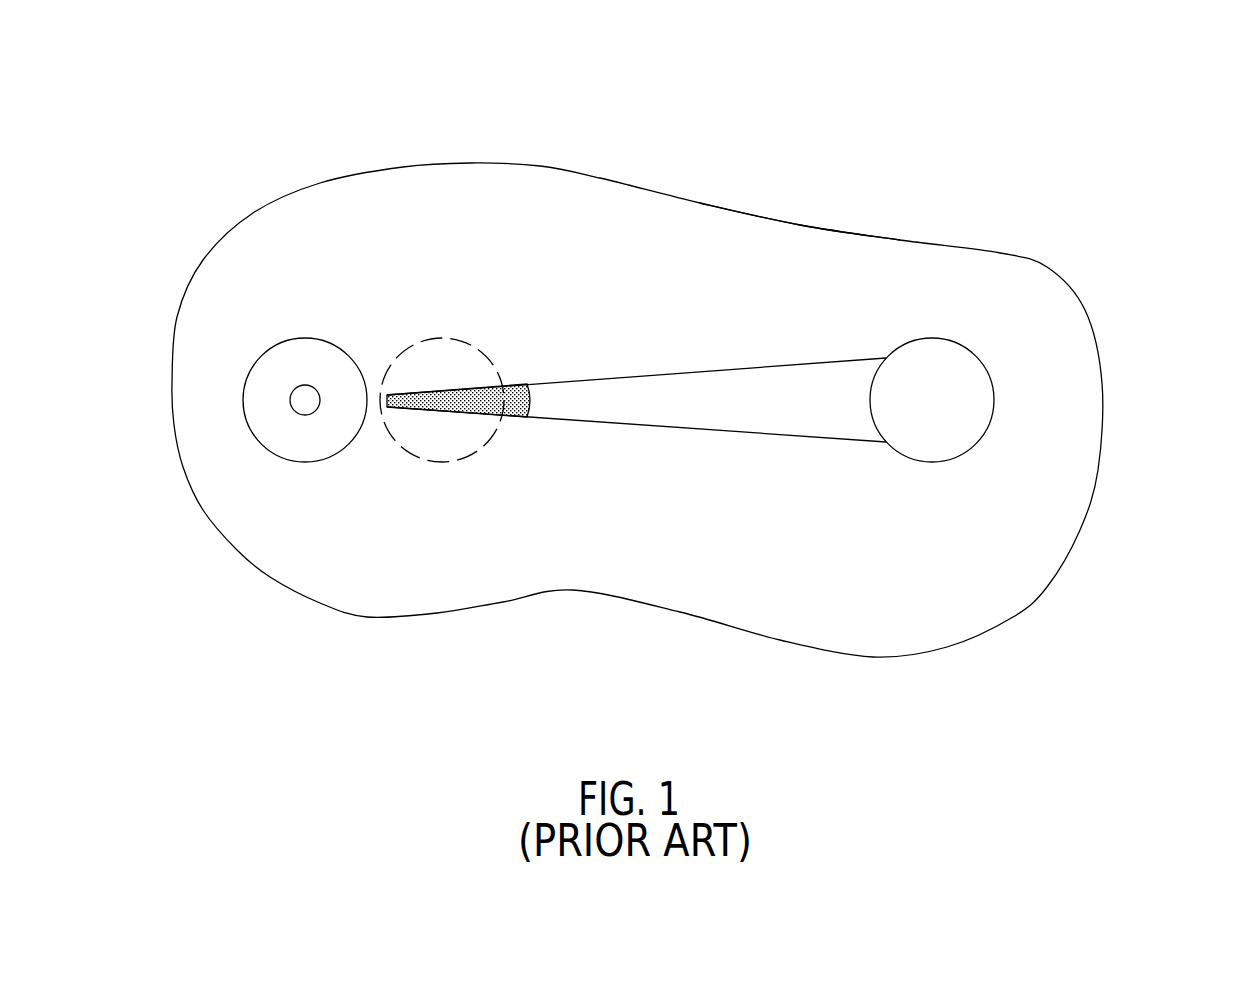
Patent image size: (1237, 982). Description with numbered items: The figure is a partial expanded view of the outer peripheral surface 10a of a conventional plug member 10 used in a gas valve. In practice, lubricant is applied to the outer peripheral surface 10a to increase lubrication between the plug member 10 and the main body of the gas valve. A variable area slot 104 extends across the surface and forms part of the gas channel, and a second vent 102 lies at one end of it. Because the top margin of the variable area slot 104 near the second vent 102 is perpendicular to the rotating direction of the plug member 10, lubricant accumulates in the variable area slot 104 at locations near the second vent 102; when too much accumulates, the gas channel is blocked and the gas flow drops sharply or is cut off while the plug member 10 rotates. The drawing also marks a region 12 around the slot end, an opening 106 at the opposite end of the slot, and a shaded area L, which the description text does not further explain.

The plug member 10 is at (1047, 268).
The outer peripheral surface 10a is at (747, 267).
The region of slot end 12 is at (453, 337).
The second vent 102 is at (297, 410).
The variable area slot 104 is at (570, 420).
The second hole 106 is at (995, 400).
The laser-affected region L is at (455, 410).